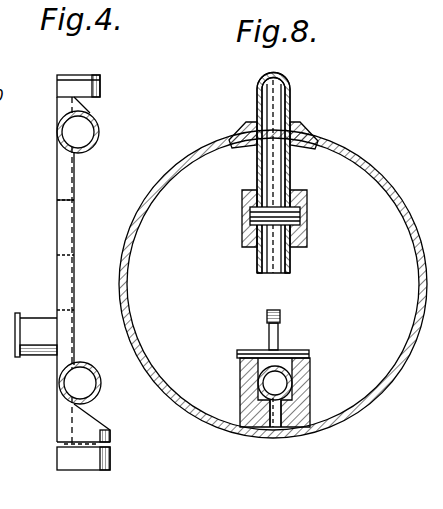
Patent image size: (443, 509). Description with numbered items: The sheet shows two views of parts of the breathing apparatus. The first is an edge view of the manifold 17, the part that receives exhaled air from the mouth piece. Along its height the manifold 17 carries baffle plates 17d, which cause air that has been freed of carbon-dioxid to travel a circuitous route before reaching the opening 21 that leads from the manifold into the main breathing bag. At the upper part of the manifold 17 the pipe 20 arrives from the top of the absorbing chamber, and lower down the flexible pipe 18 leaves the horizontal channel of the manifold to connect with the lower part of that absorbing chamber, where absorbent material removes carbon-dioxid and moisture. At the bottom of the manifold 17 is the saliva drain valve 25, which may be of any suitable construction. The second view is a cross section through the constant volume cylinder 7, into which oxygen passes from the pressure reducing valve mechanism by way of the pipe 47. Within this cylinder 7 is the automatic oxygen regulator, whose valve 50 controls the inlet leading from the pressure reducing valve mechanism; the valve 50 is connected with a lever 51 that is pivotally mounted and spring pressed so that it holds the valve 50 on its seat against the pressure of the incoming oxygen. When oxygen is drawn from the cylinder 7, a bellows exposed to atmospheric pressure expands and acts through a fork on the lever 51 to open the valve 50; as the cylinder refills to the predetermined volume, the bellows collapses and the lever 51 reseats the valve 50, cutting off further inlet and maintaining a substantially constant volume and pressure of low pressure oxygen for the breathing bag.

In FIG. 8, the cylinder 7 is at (128, 282).
In FIG. 4, the manifold 17 is at (57, 233).
In FIG. 4, the baffle plates 17d is at (57, 200).
In FIG. 4, the flexible pipe 18 is at (103, 385).
In FIG. 4, the pipe 20 is at (107, 124).
In FIG. 4, the opening 21 is at (16, 352).
In FIG. 4, the saliva drain valve 25 is at (70, 456).
In FIG. 8, the pipe 47 is at (290, 97).
In FIG. 8, the valve 50 is at (302, 350).
In FIG. 8, the lever 51 is at (280, 315).